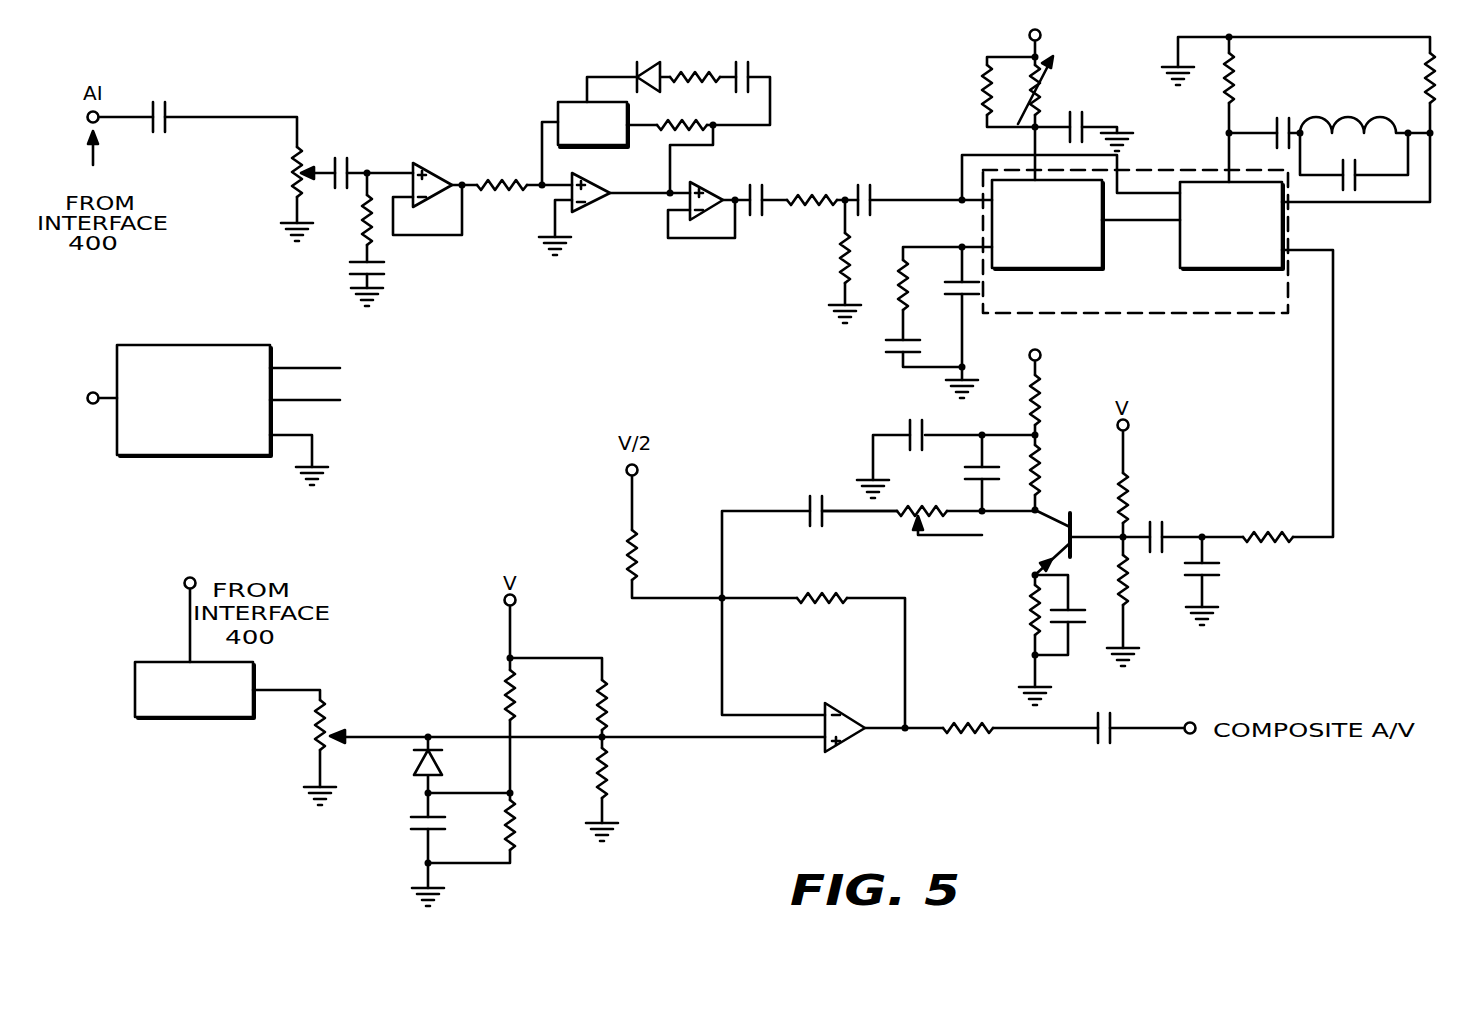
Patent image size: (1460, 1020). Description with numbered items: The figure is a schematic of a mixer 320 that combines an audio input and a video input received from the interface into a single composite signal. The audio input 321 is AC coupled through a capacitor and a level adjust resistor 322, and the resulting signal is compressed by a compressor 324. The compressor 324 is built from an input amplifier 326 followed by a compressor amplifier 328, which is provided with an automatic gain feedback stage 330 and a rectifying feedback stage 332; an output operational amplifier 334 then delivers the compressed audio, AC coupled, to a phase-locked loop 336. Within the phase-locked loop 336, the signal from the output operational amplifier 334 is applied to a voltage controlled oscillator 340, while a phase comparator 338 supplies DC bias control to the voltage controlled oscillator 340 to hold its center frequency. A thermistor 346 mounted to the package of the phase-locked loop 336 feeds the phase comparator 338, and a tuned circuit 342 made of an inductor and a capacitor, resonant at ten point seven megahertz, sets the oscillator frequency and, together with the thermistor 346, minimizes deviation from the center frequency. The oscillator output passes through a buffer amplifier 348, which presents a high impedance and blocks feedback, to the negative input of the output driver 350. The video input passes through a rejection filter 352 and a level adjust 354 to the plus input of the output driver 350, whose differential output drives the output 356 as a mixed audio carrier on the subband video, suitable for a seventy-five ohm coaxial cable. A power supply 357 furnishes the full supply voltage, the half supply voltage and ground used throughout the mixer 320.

The mixer 320 is at (294, 86).
The audio input 321 is at (98, 123).
The level adjust resistor 322 is at (311, 152).
The compressor 324 is at (536, 263).
The input amplifier 326 is at (440, 150).
The compressor amplifier 328 is at (592, 207).
The automatic gain feedback stage 330 is at (606, 143).
The rectifying feedback stage 332 is at (660, 88).
The output operational amplifier 334 is at (712, 183).
The phase-locked loop 336 is at (1152, 168).
The phase comparator 338 is at (1102, 264).
The voltage controlled oscillator 340 is at (1247, 276).
The tuned circuit 342 is at (1323, 108).
The thermistor 346 is at (1061, 72).
The buffer amplifier 348 is at (1011, 562).
The output driver 350 is at (843, 737).
The rejection filter 352 is at (225, 719).
The level adjust 354 is at (343, 716).
The output 356 is at (1187, 739).
The power supply 357 is at (213, 460).